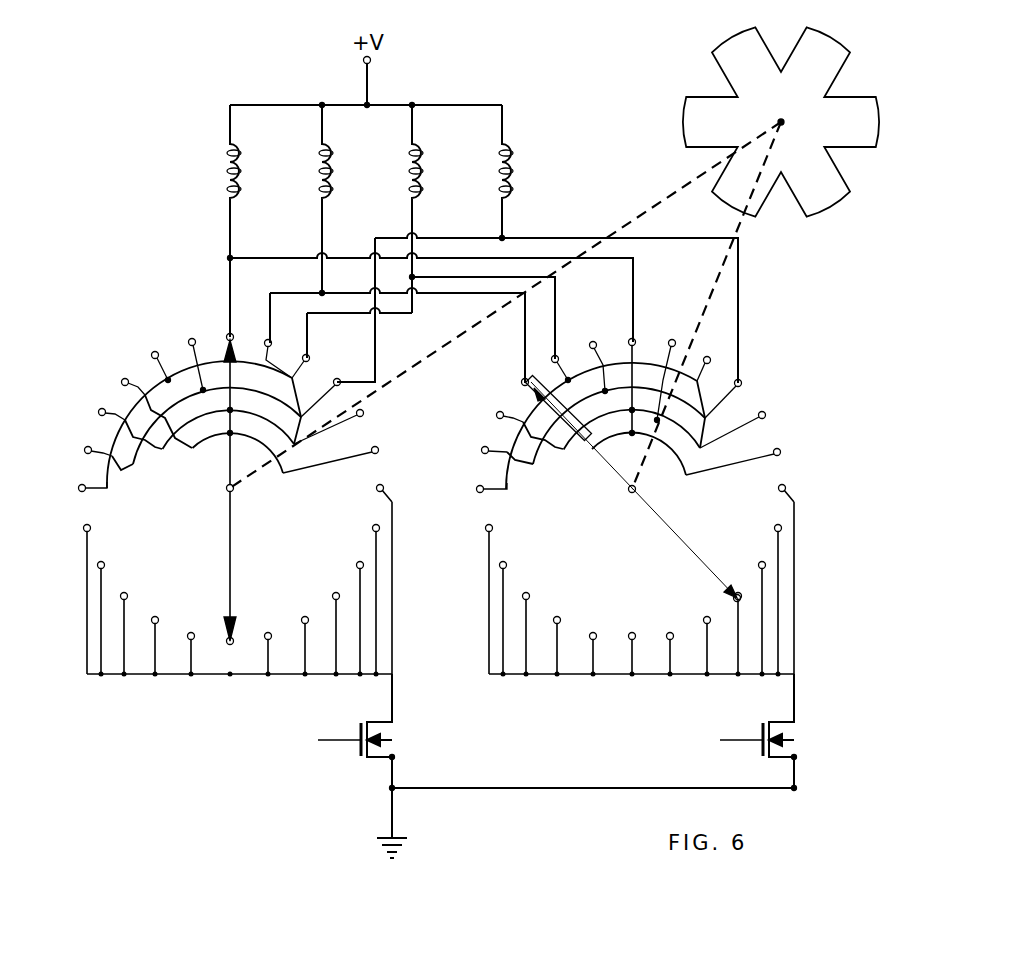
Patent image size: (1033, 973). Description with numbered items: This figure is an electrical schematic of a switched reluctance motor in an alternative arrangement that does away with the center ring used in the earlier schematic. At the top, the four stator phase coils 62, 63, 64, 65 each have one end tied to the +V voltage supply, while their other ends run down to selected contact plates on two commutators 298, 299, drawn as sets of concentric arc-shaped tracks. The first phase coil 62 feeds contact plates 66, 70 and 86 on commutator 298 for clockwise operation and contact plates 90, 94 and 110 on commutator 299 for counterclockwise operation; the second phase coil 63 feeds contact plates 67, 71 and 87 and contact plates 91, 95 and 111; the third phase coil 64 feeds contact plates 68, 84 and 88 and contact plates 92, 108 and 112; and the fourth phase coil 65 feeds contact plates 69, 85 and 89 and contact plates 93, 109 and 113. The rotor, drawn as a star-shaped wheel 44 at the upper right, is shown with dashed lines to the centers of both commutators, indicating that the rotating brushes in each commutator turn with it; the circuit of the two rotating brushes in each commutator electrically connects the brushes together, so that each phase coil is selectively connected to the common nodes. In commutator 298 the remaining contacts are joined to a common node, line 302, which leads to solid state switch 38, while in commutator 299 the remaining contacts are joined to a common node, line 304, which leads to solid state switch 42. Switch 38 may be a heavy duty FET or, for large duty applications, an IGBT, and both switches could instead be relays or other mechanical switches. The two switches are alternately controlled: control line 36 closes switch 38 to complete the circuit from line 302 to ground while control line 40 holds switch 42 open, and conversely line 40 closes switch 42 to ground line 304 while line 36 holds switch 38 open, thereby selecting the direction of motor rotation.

The control line 36 is at (335, 742).
The solid state switch 38 is at (360, 733).
The control line 40 is at (740, 742).
The solid state switch 42 is at (762, 733).
The star wheel rotor 44 is at (708, 83).
The first phase coil 62 is at (222, 173).
The second phase coil 63 is at (314, 173).
The third phase coil 64 is at (404, 173).
The fourth phase coil 65 is at (494, 173).
The contact plate 66 is at (227, 335).
The contact plate 67 is at (270, 340).
The contact plate 68 is at (308, 355).
The contact plate 69 is at (336, 378).
The contact plate 70 is at (363, 415).
The contact plate 71 is at (378, 449).
The contact plate 84 is at (80, 492).
The contact plate 85 is at (85, 453).
The contact plate 86 is at (99, 414).
The contact plate 87 is at (122, 381).
The contact plate 88 is at (153, 352).
The contact plate 89 is at (190, 339).
The contact plate 90 is at (635, 340).
The contact plate 91 is at (674, 340).
The contact plate 92 is at (708, 357).
The contact plate 93 is at (741, 383).
The contact plate 94 is at (765, 415).
The contact plate 95 is at (780, 455).
The contact plate 108 is at (478, 493).
The contact plate 109 is at (483, 453).
The contact plate 110 is at (497, 417).
The contact plate 111 is at (522, 384).
The contact plate 112 is at (558, 356).
The contact plate 113 is at (596, 342).
The commutator 298 is at (227, 465).
The commutator 299 is at (647, 479).
The common node line 302 is at (531, 766).
The common node line 304 is at (784, 741).